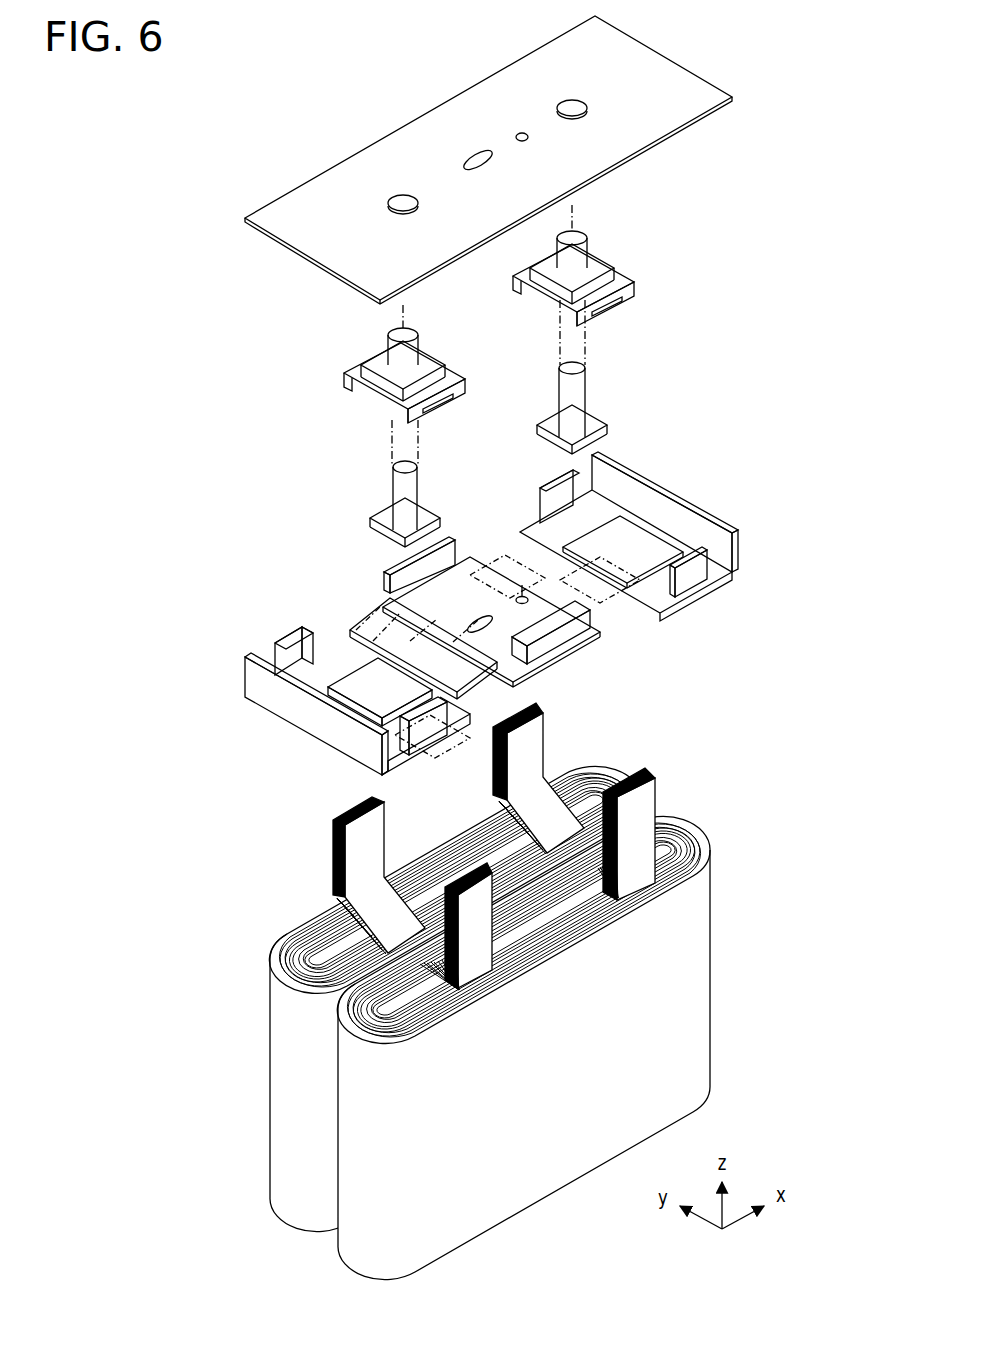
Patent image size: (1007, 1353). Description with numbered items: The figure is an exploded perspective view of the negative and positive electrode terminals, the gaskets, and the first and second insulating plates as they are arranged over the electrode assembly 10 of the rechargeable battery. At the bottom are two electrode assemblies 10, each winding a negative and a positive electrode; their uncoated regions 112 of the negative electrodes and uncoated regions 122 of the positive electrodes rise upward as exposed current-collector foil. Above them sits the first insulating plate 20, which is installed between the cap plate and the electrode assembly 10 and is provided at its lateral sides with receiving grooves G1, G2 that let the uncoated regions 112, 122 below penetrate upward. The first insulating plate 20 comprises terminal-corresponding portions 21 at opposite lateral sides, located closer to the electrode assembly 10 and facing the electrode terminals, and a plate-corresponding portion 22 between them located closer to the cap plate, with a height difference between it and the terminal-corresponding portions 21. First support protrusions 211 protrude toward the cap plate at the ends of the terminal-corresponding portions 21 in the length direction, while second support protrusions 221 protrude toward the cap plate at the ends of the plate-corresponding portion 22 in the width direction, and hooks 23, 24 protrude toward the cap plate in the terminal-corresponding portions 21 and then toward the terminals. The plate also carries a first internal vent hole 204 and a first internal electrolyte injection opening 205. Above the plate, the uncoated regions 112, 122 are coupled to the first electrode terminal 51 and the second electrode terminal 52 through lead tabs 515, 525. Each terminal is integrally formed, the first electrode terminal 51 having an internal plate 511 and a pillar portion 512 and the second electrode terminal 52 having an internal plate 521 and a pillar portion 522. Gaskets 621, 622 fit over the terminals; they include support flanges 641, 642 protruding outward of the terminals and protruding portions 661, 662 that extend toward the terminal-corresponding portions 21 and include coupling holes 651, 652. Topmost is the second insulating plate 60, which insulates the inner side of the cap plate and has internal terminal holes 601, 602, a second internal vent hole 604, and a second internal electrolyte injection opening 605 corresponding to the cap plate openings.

The electrode assembly 10 is at (710, 985).
The uncoated region 112 is at (350, 605).
The uncoated region 122 is at (622, 778).
The first insulating plate 20 is at (325, 682).
The terminal-corresponding portion 21 is at (586, 619).
The first support protrusion 211 is at (273, 702).
The plate-corresponding portion 22 is at (563, 643).
The second support protrusion 221 is at (513, 606).
The hook 23 is at (292, 630).
The hook 24 is at (557, 475).
The first internal vent hole 204 is at (390, 597).
The first internal electrolyte injection opening 205 is at (508, 566).
The receiving groove G1 is at (634, 615).
The receiving groove G2 is at (522, 585).
The first electrode terminal 51 is at (397, 487).
The internal plate 511 is at (385, 512).
The pillar portion 512 is at (414, 466).
The second electrode terminal 52 is at (582, 394).
The internal plate 521 is at (596, 421).
The pillar portion 522 is at (583, 366).
The lead tab 515 is at (377, 693).
The lead tab 525 is at (635, 545).
The second insulating plate 60 is at (488, 160).
The internal terminal hole 601 is at (398, 197).
The internal terminal hole 602 is at (567, 102).
The second internal vent hole 604 is at (474, 156).
The second internal electrolyte injection opening 605 is at (519, 134).
The gasket 621 is at (401, 371).
The gasket 622 is at (613, 272).
The support flange 641 is at (409, 386).
The support flange 642 is at (613, 288).
The coupling hole 651 is at (457, 398).
The coupling hole 652 is at (625, 305).
The protruding portion 661 is at (470, 383).
The protruding portion 662 is at (634, 290).